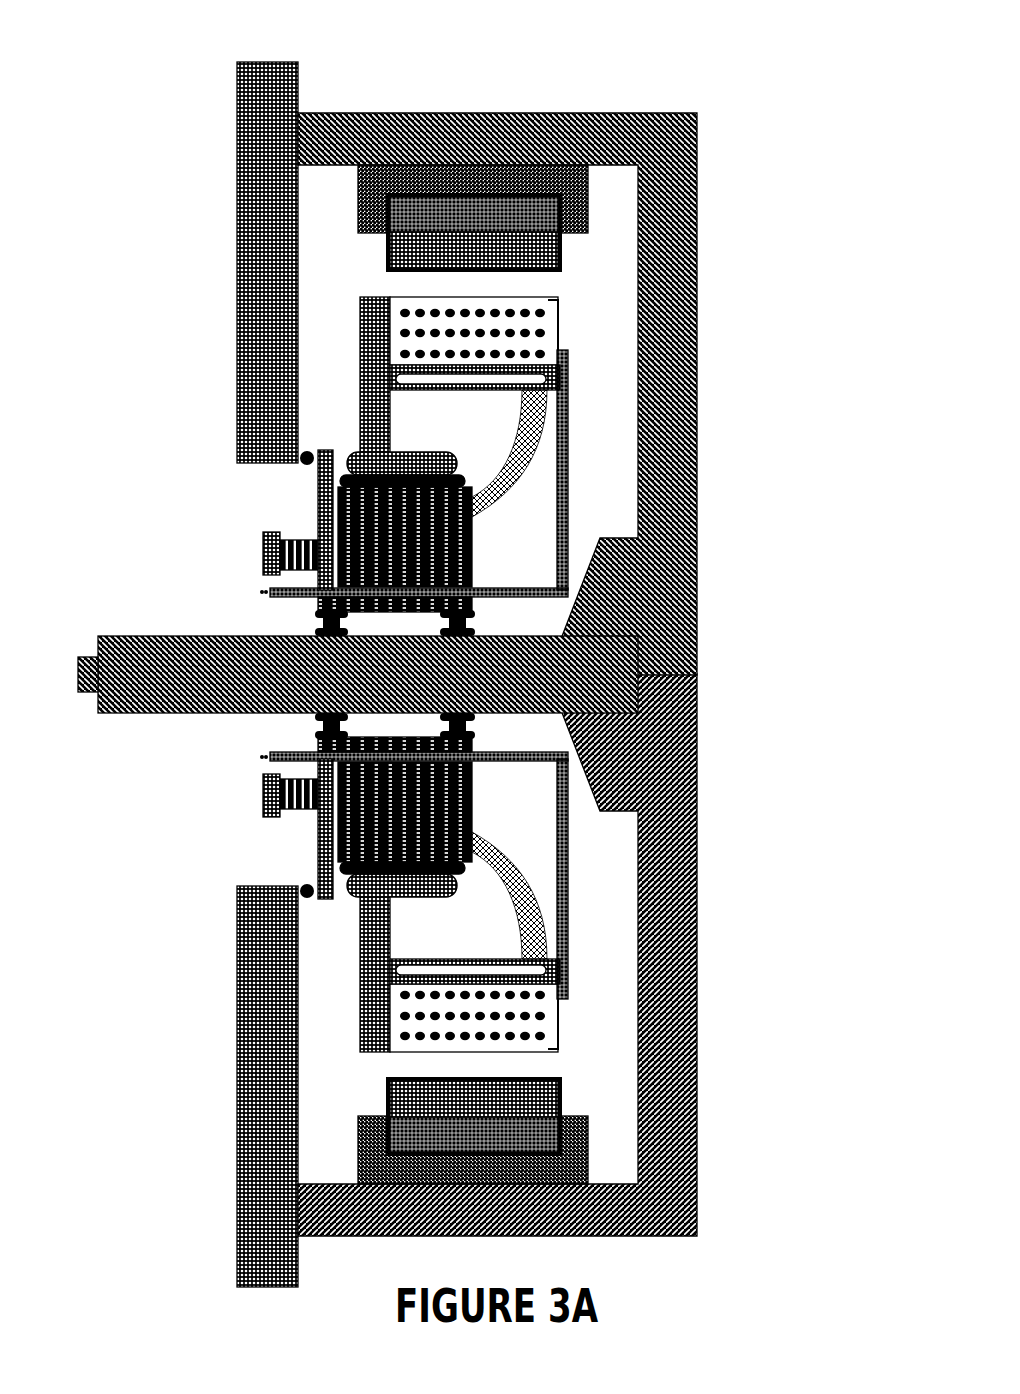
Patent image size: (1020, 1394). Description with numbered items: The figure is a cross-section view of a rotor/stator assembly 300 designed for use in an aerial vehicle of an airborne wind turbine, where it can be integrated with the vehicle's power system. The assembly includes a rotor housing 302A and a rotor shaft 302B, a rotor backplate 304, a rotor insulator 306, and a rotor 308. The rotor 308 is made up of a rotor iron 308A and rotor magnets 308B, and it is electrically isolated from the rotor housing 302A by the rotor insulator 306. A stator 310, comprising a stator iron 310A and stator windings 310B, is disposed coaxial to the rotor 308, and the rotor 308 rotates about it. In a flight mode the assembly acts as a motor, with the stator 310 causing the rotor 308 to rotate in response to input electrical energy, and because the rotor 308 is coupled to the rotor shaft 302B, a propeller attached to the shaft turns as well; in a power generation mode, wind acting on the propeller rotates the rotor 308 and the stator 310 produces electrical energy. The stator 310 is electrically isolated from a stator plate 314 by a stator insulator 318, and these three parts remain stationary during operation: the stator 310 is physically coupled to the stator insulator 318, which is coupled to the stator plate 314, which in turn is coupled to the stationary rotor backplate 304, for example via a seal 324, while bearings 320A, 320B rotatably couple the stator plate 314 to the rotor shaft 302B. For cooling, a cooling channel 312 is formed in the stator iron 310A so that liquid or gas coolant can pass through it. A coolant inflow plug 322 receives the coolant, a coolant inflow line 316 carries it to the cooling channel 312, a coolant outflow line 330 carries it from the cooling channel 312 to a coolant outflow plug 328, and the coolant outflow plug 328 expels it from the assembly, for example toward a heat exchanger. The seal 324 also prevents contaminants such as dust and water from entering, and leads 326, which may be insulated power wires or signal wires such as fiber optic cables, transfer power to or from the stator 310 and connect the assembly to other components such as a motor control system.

The rotor/stator assembly 300 is at (163, 115).
The rotor housing 302A is at (610, 113).
The rotor shaft 302B is at (178, 636).
The rotor backplate 304 is at (283, 62).
The rotor insulator 306 is at (362, 172).
The rotor 308 is at (384, 251).
The rotor iron 308A is at (474, 214).
The rotor magnets 308B is at (474, 250).
The stator 310 is at (358, 323).
The stator iron 310A is at (361, 349).
The stator windings 310B is at (550, 307).
The cooling channel 312 is at (433, 379).
The stator plate 314 is at (468, 574).
The coolant inflow line 316 is at (525, 400).
The stator insulator 318 is at (470, 484).
The bearing 320A is at (315, 632).
The bearing 320B is at (474, 634).
The coolant inflow plug 322 is at (263, 546).
The seal 324 is at (306, 467).
The leads 326 is at (563, 502).
The coolant outflow plug 328 is at (263, 853).
The coolant outflow line 330 is at (525, 949).